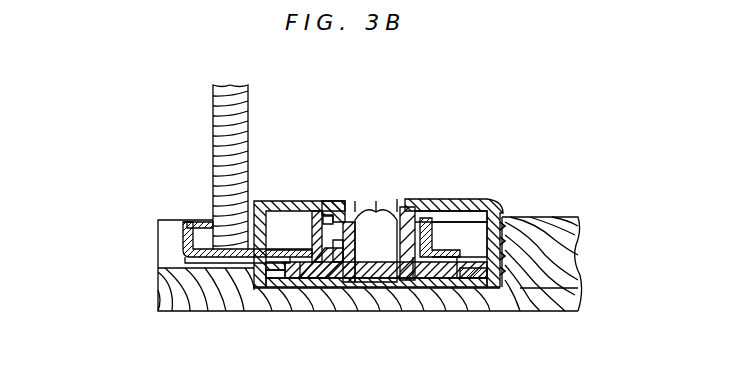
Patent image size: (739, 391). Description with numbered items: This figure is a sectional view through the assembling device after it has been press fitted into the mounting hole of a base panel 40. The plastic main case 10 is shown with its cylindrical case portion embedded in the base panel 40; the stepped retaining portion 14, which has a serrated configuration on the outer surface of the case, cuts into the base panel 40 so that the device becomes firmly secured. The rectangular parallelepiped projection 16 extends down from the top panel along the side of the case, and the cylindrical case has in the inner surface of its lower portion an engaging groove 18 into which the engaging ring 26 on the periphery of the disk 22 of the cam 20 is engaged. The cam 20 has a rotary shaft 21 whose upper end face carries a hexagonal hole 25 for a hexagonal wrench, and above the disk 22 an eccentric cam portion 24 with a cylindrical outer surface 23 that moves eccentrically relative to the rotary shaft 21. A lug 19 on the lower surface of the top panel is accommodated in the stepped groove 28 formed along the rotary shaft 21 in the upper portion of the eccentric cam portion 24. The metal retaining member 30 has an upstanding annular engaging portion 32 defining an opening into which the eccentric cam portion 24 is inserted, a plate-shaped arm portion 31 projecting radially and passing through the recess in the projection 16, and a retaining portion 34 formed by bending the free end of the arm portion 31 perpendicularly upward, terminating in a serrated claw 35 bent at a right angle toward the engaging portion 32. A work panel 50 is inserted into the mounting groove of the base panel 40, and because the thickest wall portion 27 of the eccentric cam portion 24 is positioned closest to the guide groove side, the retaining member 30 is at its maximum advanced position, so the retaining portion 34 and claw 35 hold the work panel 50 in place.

The main case 10 is at (408, 226).
The stepped retaining portion 14 is at (507, 228).
The projection 16 is at (263, 205).
The engaging groove 18 is at (480, 298).
The lug 19 is at (356, 218).
The cam 20 is at (382, 191).
The rotary shaft 21 is at (414, 210).
The disk 22 is at (447, 290).
The cylindrical outer surface 23 is at (313, 205).
The eccentric cam portion 24 is at (456, 212).
The hexagonal hole 25 is at (392, 210).
The engaging ring 26 is at (265, 280).
The thickest wall portion 27 is at (337, 288).
The stepped groove 28 is at (335, 200).
The retaining member 30 is at (176, 256).
The arm portion 31 is at (214, 265).
The engaging portion 32 is at (299, 200).
The retaining portion 34 is at (183, 225).
The serrated claw 35 is at (200, 226).
The base panel 40 is at (544, 298).
The work panel 50 is at (214, 131).